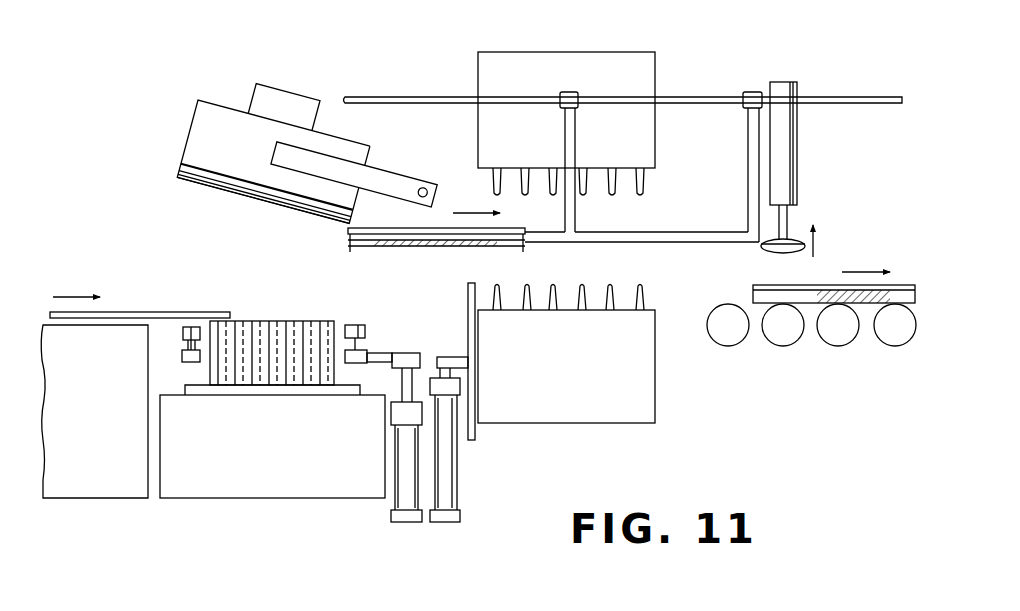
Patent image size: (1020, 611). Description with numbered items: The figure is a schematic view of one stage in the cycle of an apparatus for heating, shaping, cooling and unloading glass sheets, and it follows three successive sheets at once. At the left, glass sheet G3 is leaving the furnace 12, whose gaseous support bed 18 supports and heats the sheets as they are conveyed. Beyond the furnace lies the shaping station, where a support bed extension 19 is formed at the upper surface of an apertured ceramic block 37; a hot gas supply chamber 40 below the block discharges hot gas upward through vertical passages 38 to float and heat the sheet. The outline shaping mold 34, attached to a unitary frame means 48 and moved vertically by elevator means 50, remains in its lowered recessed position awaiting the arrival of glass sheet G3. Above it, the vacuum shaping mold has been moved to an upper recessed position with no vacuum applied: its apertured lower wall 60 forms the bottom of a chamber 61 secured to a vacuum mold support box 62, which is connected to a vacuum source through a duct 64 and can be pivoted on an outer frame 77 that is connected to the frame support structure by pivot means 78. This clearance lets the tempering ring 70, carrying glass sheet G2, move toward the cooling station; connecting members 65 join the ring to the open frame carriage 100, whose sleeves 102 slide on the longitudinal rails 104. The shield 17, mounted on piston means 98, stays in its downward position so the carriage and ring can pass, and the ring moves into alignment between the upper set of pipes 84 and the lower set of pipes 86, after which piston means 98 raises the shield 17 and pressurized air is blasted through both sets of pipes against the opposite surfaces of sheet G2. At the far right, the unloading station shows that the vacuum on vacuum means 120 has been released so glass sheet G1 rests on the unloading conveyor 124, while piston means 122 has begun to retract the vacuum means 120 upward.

The furnace 12 is at (107, 419).
The shield 17 is at (477, 432).
The gaseous support bed 18 is at (50, 315).
The support bed extension 19 is at (267, 312).
The outline shaping mold 34 is at (397, 337).
The apertured ceramic block 37 is at (208, 368).
The vertical passages 38 is at (280, 330).
The hot gas supply chamber 40 is at (283, 454).
The unitary frame means 48 is at (380, 353).
The elevator means 50 is at (402, 485).
The apertured lower wall 60 is at (270, 193).
The chamber 61 is at (180, 166).
The vacuum mold support box 62 is at (198, 115).
The duct 64 is at (257, 93).
The connecting members 65 is at (550, 240).
The tempering ring 70 is at (348, 246).
The outer frame 77 is at (395, 182).
The pivot means 78 is at (425, 187).
The upper set of pipes 84 is at (613, 190).
The lower set of pipes 86 is at (527, 287).
The piston means 98 is at (448, 470).
The open frame carriage 100 is at (677, 245).
The sleeves 102 is at (757, 90).
The rails 104 is at (687, 97).
The vacuum means 120 is at (787, 250).
The piston means 122 is at (790, 157).
The unloading conveyor 124 is at (833, 350).
The glass sheet G1 is at (813, 280).
The glass sheet G2 is at (445, 253).
The glass sheet G3 is at (170, 307).